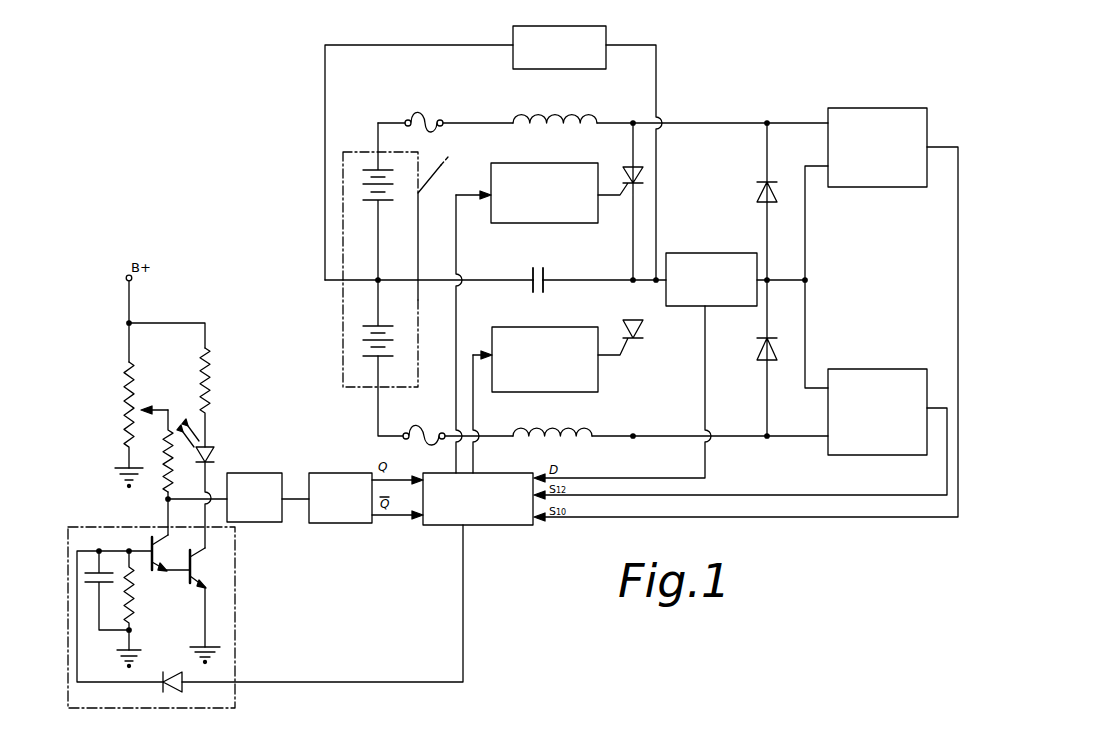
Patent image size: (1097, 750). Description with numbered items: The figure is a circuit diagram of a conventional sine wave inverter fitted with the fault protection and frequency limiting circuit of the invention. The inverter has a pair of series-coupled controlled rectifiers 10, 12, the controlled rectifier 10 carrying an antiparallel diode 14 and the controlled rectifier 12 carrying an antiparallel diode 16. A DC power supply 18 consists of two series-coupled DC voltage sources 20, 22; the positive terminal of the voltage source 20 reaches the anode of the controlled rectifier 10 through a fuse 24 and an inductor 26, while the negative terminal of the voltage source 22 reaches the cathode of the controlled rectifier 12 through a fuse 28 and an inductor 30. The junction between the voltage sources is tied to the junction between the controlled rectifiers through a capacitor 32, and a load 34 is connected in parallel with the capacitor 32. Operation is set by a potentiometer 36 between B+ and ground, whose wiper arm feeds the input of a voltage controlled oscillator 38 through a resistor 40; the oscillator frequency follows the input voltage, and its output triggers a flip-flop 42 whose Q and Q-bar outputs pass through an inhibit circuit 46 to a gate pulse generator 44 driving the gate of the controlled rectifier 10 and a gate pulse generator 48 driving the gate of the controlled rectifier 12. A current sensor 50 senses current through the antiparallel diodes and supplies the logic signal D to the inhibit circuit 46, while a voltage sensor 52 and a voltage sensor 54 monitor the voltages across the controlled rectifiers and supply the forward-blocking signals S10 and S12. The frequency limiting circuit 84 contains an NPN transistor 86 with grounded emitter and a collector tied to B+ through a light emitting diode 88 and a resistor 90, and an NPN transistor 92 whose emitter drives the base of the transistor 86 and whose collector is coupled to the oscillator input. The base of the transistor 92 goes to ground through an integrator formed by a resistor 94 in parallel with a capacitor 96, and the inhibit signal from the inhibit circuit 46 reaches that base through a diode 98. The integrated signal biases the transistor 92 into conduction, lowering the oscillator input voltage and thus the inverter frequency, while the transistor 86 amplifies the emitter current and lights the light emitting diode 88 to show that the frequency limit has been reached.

The controlled rectifier 10 is at (627, 176).
The controlled rectifier 12 is at (644, 330).
The antiparallel diode 14 is at (757, 187).
The antiparallel diode 16 is at (757, 355).
The DC power supply 18 is at (444, 220).
The DC voltage source 20 is at (378, 168).
The DC voltage source 22 is at (370, 326).
The fuse 24 is at (410, 120).
The inductor 26 is at (565, 114).
The fuse 28 is at (432, 428).
The inductor 30 is at (565, 428).
The capacitor 32 is at (546, 270).
The load 34 is at (512, 60).
The potentiometer 36 is at (122, 387).
The voltage controlled oscillator 38 is at (272, 473).
The resistor 40 is at (162, 468).
The flip-flop 42 is at (363, 523).
The gate pulse generator 44 is at (506, 223).
The inhibit circuit 46 is at (525, 525).
The gate pulse generator 48 is at (576, 330).
The current sensor 50 is at (680, 253).
The voltage sensor 52 is at (913, 187).
The voltage sensor 54 is at (877, 369).
The frequency limiting circuit 84 is at (235, 657).
The NPN transistor 86 is at (196, 583).
The light emitting diode 88 is at (215, 450).
The resistor 90 is at (212, 372).
The NPN transistor 92 is at (150, 550).
The resistor 94 is at (133, 592).
The capacitor 96 is at (90, 584).
The diode 98 is at (172, 692).